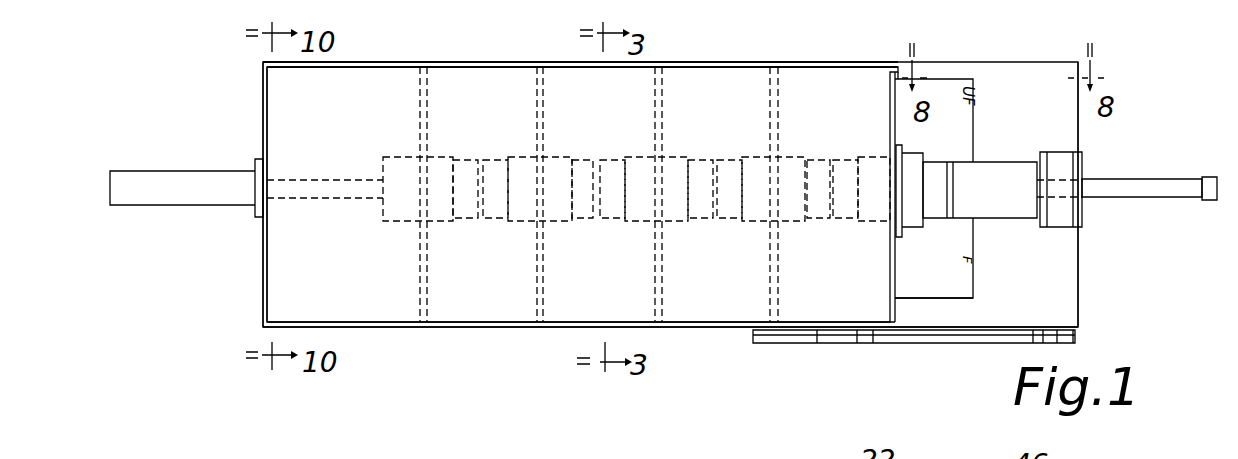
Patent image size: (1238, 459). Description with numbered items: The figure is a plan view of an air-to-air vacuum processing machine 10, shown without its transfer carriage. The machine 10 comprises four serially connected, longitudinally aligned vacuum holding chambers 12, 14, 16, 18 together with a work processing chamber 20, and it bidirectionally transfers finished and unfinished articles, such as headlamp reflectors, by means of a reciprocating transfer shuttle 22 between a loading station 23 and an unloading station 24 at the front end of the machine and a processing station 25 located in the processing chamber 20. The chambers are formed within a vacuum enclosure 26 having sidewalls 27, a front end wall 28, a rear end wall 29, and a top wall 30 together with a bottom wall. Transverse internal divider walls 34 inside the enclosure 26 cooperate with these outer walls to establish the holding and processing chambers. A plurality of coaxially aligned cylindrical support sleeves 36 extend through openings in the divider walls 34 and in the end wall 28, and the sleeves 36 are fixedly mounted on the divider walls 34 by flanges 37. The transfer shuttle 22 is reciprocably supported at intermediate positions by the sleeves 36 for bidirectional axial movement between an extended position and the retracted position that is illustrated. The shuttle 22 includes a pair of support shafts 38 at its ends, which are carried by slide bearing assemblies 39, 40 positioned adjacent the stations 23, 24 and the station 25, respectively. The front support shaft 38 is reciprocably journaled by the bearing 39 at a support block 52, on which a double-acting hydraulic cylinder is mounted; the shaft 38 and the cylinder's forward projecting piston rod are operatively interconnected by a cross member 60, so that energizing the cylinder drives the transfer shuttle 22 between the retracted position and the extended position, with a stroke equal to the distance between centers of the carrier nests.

The vacuum processing machine 10 is at (250, 284).
The vacuum holding chamber 12 is at (840, 308).
The vacuum holding chamber 14 is at (690, 300).
The vacuum holding chamber 16 is at (570, 305).
The vacuum holding chamber 18 is at (503, 298).
The work processing chamber 20 is at (383, 305).
The transfer shuttle 22 is at (1000, 158).
The loading station 23 is at (965, 98).
The unloading station 24 is at (965, 278).
The processing station 25 is at (278, 250).
The vacuum enclosure 26 is at (457, 338).
The sidewalls 27 is at (490, 67).
The front end wall 28 is at (893, 312).
The rear end wall 29 is at (263, 117).
The top wall 30 is at (833, 82).
The transverse internal divider walls 34 is at (427, 125).
The cylindrical support sleeves 36 is at (405, 157).
The flanges 37 is at (903, 182).
The support shafts 38 is at (298, 180).
The slide bearing assembly 39 is at (1063, 213).
The slide bearing assembly 40 is at (170, 182).
The support block 52 is at (1073, 228).
The cross member 60 is at (1212, 200).